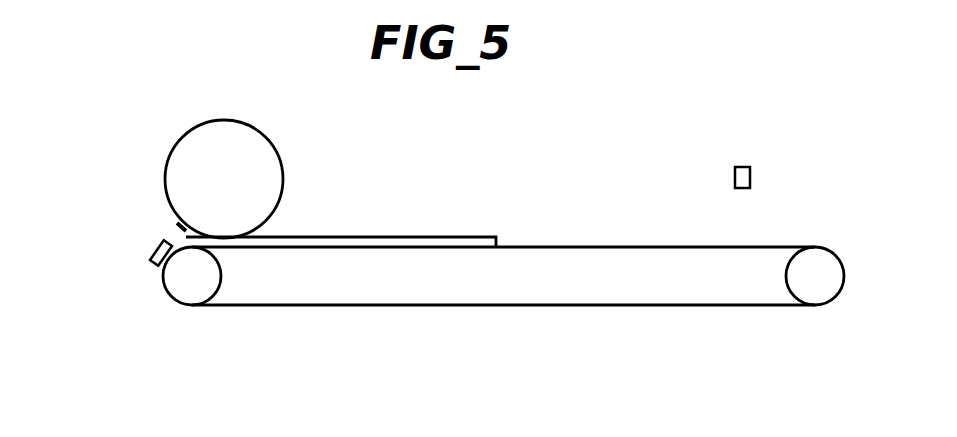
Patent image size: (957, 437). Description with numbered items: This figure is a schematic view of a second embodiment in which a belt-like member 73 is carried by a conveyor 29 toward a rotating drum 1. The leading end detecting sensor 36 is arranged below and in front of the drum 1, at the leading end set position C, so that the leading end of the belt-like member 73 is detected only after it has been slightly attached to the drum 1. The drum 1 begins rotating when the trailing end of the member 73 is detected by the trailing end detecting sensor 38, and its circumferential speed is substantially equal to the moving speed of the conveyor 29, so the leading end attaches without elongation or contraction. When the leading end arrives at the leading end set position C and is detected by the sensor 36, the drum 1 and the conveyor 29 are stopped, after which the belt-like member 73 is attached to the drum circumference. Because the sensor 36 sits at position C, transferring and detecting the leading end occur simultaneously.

The drum 1 is at (258, 170).
The conveyor 29 is at (586, 247).
The belt-like member 73 is at (411, 237).
The leading end set position C is at (177, 225).
The leading end detecting sensor 36 is at (153, 251).
The trailing end detecting sensor 38 is at (735, 176).